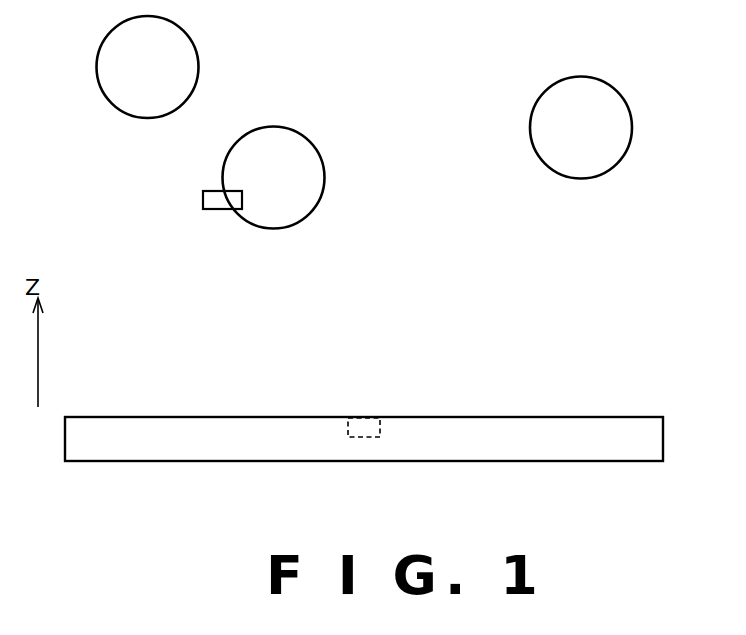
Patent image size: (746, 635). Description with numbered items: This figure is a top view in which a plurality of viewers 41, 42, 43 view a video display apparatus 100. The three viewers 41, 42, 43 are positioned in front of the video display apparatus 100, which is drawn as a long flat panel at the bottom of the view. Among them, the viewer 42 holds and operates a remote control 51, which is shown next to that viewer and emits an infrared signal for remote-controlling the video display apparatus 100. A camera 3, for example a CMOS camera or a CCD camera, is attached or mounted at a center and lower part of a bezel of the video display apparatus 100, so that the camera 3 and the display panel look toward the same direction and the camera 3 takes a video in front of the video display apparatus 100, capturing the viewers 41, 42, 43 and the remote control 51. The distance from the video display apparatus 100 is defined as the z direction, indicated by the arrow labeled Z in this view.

The viewer 41 is at (191, 40).
The viewer 42 is at (315, 152).
The viewer 43 is at (615, 85).
The remote control 51 is at (213, 210).
The video display apparatus 100 is at (202, 462).
The camera 3 is at (363, 417).